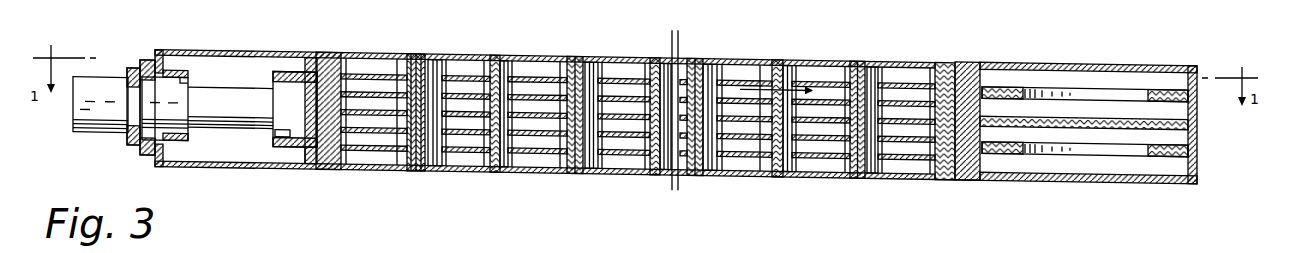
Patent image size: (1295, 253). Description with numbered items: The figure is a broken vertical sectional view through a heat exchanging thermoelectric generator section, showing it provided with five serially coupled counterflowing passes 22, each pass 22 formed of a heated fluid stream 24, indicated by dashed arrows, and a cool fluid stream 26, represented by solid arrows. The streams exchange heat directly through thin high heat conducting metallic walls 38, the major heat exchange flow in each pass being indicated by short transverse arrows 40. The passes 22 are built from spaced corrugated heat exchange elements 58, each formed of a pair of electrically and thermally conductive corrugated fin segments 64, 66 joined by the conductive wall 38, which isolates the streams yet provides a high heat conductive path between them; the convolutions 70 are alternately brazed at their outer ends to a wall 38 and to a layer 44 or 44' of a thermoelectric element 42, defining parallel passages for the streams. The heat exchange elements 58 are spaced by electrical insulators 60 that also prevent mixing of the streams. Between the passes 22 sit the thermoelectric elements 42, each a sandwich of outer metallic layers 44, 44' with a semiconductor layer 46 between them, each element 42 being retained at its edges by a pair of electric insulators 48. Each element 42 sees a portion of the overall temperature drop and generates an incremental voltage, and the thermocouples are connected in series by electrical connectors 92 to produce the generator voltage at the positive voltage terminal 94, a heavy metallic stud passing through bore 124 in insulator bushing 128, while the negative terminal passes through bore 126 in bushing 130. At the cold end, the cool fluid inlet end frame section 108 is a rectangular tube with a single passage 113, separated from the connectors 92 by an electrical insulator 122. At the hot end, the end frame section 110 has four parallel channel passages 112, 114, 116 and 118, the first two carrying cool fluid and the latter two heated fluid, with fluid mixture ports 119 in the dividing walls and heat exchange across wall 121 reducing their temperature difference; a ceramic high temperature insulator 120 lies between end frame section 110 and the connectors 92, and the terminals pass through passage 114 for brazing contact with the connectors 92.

The heat exchanging fluid stream pass 22 is at (467, 172).
The heated fluid stream 24 is at (467, 63).
The cool fluid stream 26 is at (370, 65).
The conductive wall 38 is at (494, 60).
The transverse arrow 40 is at (728, 63).
The thermoelectric element 42 is at (428, 22).
The outer metallic layer 44 is at (393, 135).
The outer metallic layer 44' is at (443, 137).
The semiconductor layer 46 is at (417, 173).
The electric insulator 48 is at (372, 167).
The heat exchange element 58 is at (823, 52).
The electrical insulator 60 is at (510, 142).
The corrugated fin segment 64 is at (742, 173).
The corrugated fin segment 66 is at (822, 178).
The convolution 70 is at (636, 62).
The electrical connector 92 is at (338, 53).
The positive voltage terminal 94 is at (73, 133).
The cool fluid inlet end frame section 108 is at (263, 167).
The end frame section 110 is at (1050, 63).
The passage 112 is at (1168, 75).
The passage 113 is at (203, 152).
The passage 114 is at (1172, 110).
The passage 116 is at (1172, 137).
The passage 118 is at (1173, 167).
The fluid mixture port 119 is at (1120, 90).
The high temperature insulator 120 is at (965, 182).
The wall 121 is at (1113, 127).
The electrical insulator 122 is at (312, 172).
The bore 124 is at (189, 78).
The bore 126 is at (275, 133).
The insulator bushing 128 is at (146, 62).
The insulator bushing 130 is at (290, 70).